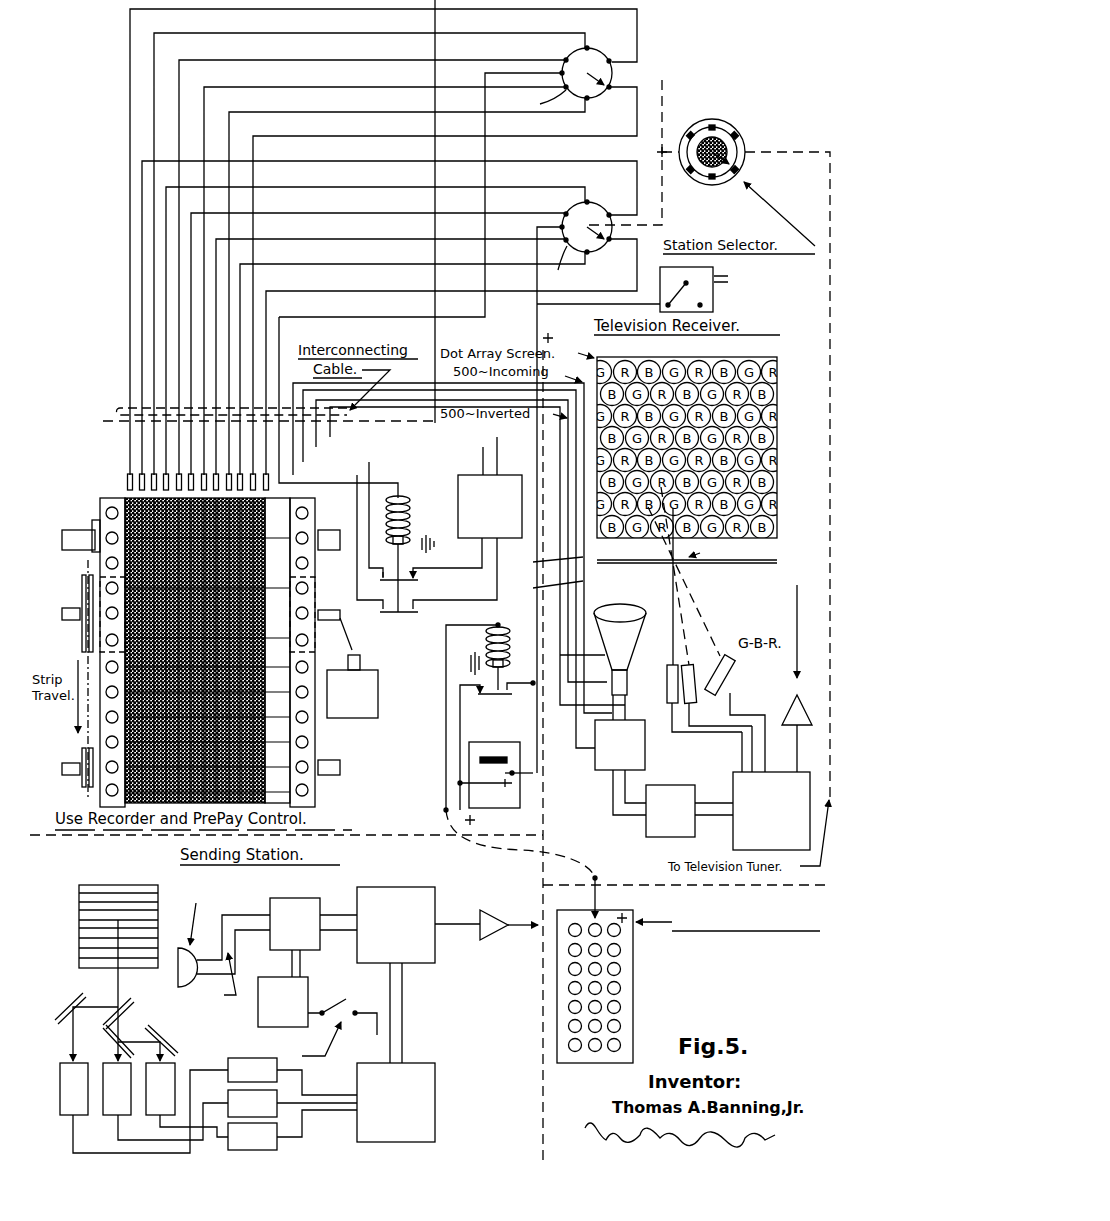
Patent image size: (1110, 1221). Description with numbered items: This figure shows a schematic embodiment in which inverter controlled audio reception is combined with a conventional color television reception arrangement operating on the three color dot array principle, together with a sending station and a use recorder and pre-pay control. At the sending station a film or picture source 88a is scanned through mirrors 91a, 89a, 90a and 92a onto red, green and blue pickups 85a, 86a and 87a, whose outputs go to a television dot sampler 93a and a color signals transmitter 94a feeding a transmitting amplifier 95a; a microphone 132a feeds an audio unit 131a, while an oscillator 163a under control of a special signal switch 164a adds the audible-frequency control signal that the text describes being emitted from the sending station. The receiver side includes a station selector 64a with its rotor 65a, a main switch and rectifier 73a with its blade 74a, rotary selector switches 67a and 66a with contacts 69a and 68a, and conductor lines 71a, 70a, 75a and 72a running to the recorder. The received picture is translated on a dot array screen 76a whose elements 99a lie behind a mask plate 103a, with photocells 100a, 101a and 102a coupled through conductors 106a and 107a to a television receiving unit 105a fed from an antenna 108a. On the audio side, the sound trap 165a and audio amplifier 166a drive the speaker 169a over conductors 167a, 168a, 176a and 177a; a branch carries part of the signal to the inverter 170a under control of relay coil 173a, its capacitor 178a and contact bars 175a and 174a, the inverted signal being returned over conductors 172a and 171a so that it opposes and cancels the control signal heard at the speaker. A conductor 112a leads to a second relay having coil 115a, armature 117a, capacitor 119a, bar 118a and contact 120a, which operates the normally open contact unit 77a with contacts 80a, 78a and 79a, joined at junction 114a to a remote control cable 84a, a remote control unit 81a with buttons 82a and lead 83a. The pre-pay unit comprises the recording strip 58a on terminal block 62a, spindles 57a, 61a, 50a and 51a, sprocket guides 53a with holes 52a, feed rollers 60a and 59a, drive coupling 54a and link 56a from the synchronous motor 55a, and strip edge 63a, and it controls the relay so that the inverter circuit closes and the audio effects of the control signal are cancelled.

The conductor lines 71a is at (398, 11).
The conductor lines 70a is at (398, 163).
The conductor 75a is at (486, 152).
The conductor 72a is at (537, 281).
The rotary selector switch 67a is at (590, 98).
The switch contact 69a is at (539, 100).
The rotary selector switch 66a is at (590, 252).
The switch contact 68a is at (555, 265).
The station selector switch 64a is at (718, 120).
The selector switch rotor 65a is at (680, 150).
The main switch and rectifier 73a is at (664, 273).
The main switch blade 74a is at (704, 300).
The dot array screen 76a is at (826, 391).
The dot array screen element 99a is at (779, 460).
The mask plate 103a is at (705, 566).
The speaker 169a is at (626, 643).
The green photocell 100a is at (667, 688).
The red photocell 101a is at (688, 703).
The blue photocell 102a is at (728, 686).
The conductor 106a is at (746, 750).
The conductor 107a is at (752, 765).
The antenna 108a is at (767, 753).
The television receiving unit 105a is at (742, 842).
The sound trap 165a is at (646, 834).
The audio amplifier 166a is at (601, 771).
The conductor 167a is at (595, 752).
The conductor 168a is at (578, 716).
The conductor 176a is at (459, 569).
The conductor 177a is at (466, 545).
The audio 180 degree inverter 170a is at (456, 508).
The relay coil 173a is at (401, 499).
The capacitor 178a is at (410, 521).
The relay contact bar 175a is at (425, 527).
The relay contact bar 174a is at (427, 547).
The conductor 172a is at (545, 560).
The conductor 171a is at (545, 585).
The conductor 112a is at (540, 612).
The relay coil 115a is at (487, 641).
The relay armature 117a is at (503, 664).
The capacitor 119a is at (481, 686).
The contact bar 118a is at (486, 747).
The contact 120a is at (512, 694).
The normally open contact unit 77a is at (500, 746).
The contact bar 80a is at (490, 754).
The contact 78a is at (503, 770).
The contact 79a is at (485, 790).
The conductor junction 114a is at (446, 814).
The remote control cable 84a is at (522, 852).
The recording strip 58a is at (125, 798).
The terminal block 62a is at (125, 490).
The spindle 57a is at (100, 526).
The sprocket guide 53a is at (100, 572).
The feed roller 60a is at (82, 597).
The feed roller 59a is at (82, 748).
The spindle 61a is at (82, 782).
The spindle 50a is at (321, 535).
The drive coupling 54a is at (340, 612).
The drive link 56a is at (346, 650).
The synchronous motor 55a is at (372, 673).
The sprocket holes 52a is at (308, 742).
The spindle 51a is at (340, 765).
The strip edge 63a is at (315, 790).
The film strip 88a is at (129, 900).
The mirror 91a is at (76, 1000).
The mirror 89a is at (133, 1008).
The mirror 90a is at (113, 1046).
The mirror 92a is at (162, 1040).
The red pickup 85a is at (70, 1112).
The green pickup 86a is at (115, 1113).
The blue pickup 87a is at (161, 1114).
The television dot sampler 93a is at (436, 1121).
The color signals transmitter 94a is at (408, 885).
The transmitting amplifier 95a is at (493, 943).
The audio unit 131a is at (304, 903).
The microphone 132a is at (215, 944).
The oscillator 163a is at (310, 983).
The special signal switch 164a is at (340, 1007).
The remote control unit 81a is at (634, 976).
The remote control buttons 82a is at (620, 1006).
The remote control lead 83a is at (594, 899).